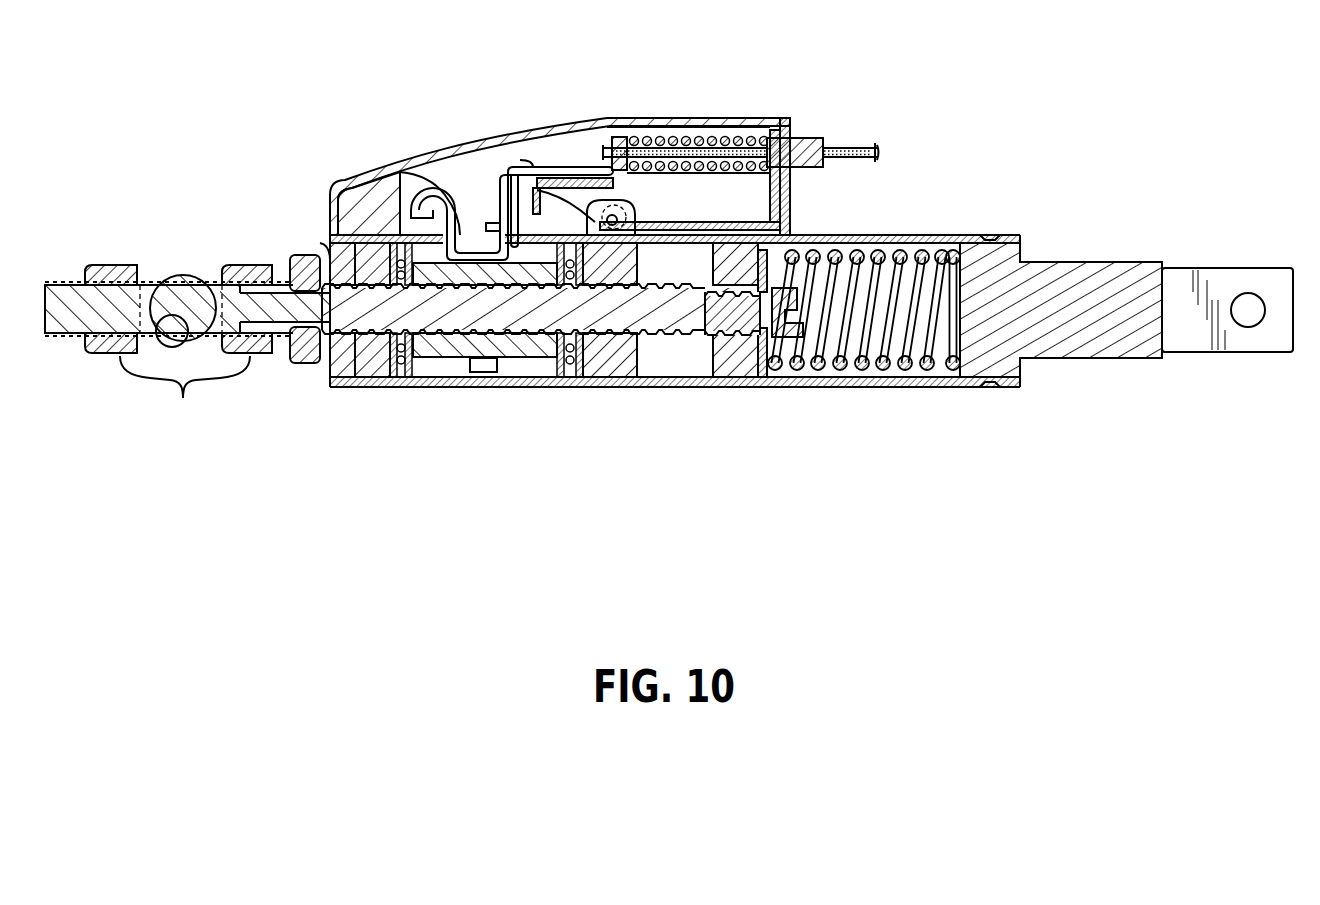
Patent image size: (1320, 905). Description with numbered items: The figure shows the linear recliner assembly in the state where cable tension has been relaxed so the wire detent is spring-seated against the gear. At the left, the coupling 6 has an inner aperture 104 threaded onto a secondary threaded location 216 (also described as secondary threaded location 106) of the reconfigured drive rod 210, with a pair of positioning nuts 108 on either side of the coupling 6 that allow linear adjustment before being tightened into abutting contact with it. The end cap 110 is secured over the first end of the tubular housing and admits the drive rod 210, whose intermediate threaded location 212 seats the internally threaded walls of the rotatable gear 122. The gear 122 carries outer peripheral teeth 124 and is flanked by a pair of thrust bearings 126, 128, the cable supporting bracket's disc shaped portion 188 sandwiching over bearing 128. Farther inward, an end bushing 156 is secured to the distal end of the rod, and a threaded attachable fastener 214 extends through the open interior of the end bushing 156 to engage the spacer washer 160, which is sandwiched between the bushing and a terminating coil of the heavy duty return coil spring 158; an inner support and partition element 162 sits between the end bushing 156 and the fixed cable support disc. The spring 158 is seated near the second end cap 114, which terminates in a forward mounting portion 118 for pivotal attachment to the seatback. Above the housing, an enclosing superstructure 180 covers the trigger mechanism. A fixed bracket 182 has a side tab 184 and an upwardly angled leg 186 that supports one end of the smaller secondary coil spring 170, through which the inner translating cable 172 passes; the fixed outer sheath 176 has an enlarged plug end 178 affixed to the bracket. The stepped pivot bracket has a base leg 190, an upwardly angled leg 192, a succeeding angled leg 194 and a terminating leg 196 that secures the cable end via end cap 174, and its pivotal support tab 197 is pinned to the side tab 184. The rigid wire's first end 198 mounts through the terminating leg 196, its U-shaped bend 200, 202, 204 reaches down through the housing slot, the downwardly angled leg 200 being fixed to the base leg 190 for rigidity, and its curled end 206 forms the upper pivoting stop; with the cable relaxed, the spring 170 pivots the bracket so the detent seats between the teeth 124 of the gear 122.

The coupling 6 is at (185, 272).
The inner aperture 104 is at (187, 300).
The secondary threaded location 106 is at (148, 290).
The positioning nuts 108 is at (185, 395).
The end cap 110 is at (330, 372).
The second end cap 114 is at (1118, 282).
The mounting portion 118 is at (1265, 285).
The rotatable gear 122 is at (455, 375).
The teeth 124 is at (486, 373).
The thrust bearing 126 is at (400, 380).
The thrust bearing 128 is at (566, 380).
The end bushing 156 is at (735, 370).
The return coil spring 158 is at (887, 337).
The spacer washer 160 is at (762, 363).
The inner support and partition element 162 is at (617, 352).
The secondary coil spring 170 is at (683, 140).
The inner translating cable 172 is at (878, 155).
The end cap 174 is at (597, 165).
The fixed outer sheath 176 is at (850, 148).
The enlarged plug end 178 is at (795, 138).
The superstructure 180 is at (600, 117).
The fixed bracket 182 is at (765, 217).
The side tab 184 is at (632, 207).
The upwardly angled leg 186 is at (787, 183).
The disc shaped portion 188 is at (587, 372).
The base leg 190 is at (437, 188).
The upwardly angled leg 192 is at (500, 170).
The succeeding angled leg 194 is at (577, 180).
The terminating leg 196 is at (614, 140).
The pivotal support tab 197 is at (513, 245).
The wire first end 198 is at (627, 165).
The downwardly angled leg 200 is at (490, 223).
The U-shaped bend portion 202 is at (407, 230).
The U-shaped bend portion 204 is at (352, 222).
The curled end 206 is at (340, 182).
The drive rod 210 is at (327, 290).
The intermediate threaded location 212 is at (333, 237).
The threaded attachable fastener 214 is at (808, 290).
The secondary threaded location 216 is at (158, 345).